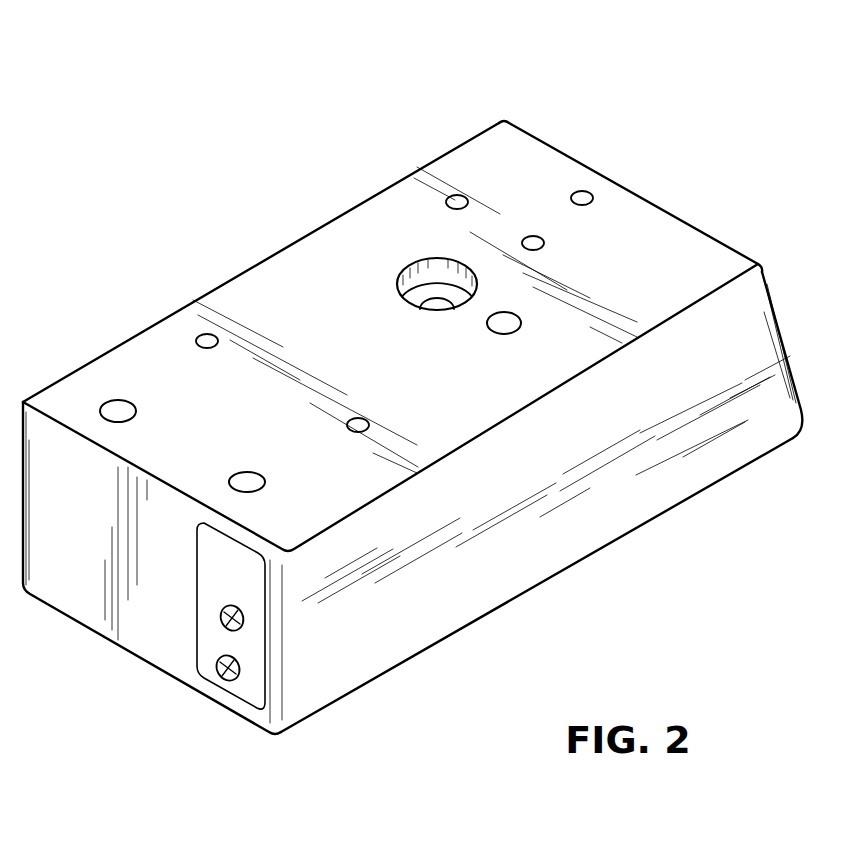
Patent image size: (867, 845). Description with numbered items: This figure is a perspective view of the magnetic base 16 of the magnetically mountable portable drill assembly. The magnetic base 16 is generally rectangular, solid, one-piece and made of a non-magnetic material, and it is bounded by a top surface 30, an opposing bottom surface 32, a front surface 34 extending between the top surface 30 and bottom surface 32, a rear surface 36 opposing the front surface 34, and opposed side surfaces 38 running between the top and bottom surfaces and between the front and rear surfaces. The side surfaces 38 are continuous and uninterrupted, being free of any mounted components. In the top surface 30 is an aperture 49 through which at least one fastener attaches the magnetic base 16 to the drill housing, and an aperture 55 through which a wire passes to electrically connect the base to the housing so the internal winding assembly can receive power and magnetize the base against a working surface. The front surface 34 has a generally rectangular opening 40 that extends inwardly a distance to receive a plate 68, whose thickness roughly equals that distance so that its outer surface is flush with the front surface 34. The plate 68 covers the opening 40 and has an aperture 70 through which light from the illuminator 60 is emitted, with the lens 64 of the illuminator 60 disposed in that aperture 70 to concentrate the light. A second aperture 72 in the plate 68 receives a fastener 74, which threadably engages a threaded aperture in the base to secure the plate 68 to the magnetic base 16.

The magnetic base 16 is at (118, 143).
The top surface 30 is at (368, 213).
The bottom surface 32 is at (460, 636).
The front surface 34 is at (143, 647).
The rear surface 36 is at (661, 208).
The side surfaces 38 is at (143, 328).
The opening 40 is at (212, 668).
The aperture 49 is at (443, 290).
The aperture 55 is at (521, 317).
The illuminator 60 is at (257, 674).
The lens 64 is at (233, 674).
The plate 68 is at (210, 592).
The aperture 70 is at (227, 670).
The aperture 72 is at (225, 606).
The fastener 74 is at (242, 622).